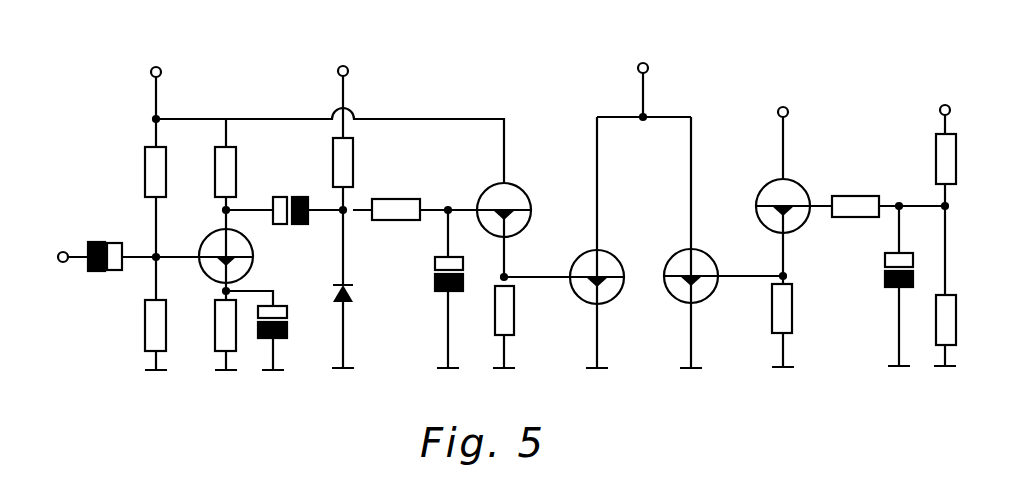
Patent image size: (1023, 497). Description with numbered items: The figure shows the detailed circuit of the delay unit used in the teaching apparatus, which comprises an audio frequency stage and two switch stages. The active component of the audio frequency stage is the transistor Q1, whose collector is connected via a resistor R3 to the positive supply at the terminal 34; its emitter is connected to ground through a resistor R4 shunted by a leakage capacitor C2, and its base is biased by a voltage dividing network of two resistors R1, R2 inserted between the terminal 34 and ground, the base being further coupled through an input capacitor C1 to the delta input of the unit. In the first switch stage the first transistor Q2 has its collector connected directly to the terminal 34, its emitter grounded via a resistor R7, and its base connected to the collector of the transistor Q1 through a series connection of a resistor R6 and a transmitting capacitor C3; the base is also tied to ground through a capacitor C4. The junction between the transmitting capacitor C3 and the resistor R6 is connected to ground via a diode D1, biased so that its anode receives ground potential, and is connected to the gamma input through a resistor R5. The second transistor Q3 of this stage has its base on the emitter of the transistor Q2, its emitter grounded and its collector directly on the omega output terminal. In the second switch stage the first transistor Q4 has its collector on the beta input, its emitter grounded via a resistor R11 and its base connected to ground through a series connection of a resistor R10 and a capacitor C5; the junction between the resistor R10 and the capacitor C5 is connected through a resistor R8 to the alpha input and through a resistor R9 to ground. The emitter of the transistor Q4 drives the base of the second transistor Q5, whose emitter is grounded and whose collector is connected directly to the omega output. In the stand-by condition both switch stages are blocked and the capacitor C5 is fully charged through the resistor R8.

The terminal 34 is at (156, 66).
The resistor R1 is at (155, 167).
The resistor R2 is at (154, 334).
The resistor R3 is at (227, 173).
The resistor R4 is at (227, 331).
The resistor R5 is at (340, 163).
The resistor R6 is at (401, 207).
The resistor R7 is at (507, 310).
The resistor R8 is at (947, 157).
The resistor R9 is at (947, 318).
The resistor R10 is at (862, 206).
The resistor R11 is at (785, 310).
The input capacitor C1 is at (112, 243).
The leakage capacitor C2 is at (278, 313).
The transmitting capacitor C3 is at (280, 197).
The capacitor C4 is at (436, 268).
The capacitor C5 is at (889, 265).
The audio frequency transistor Q1 is at (238, 244).
The first transistor of the first switch stage Q2 is at (514, 197).
The second transistor of the first switch stage Q3 is at (580, 262).
The first transistor of the second switch stage Q4 is at (763, 208).
The second transistor of the second switch stage Q5 is at (707, 262).
The diode D1 is at (351, 293).